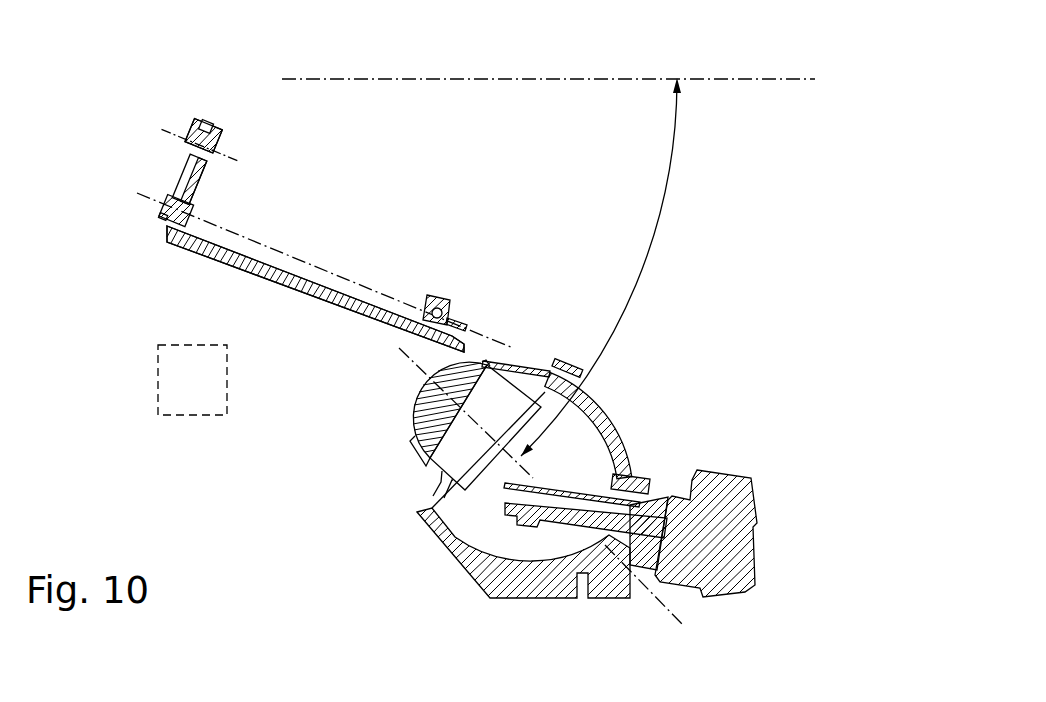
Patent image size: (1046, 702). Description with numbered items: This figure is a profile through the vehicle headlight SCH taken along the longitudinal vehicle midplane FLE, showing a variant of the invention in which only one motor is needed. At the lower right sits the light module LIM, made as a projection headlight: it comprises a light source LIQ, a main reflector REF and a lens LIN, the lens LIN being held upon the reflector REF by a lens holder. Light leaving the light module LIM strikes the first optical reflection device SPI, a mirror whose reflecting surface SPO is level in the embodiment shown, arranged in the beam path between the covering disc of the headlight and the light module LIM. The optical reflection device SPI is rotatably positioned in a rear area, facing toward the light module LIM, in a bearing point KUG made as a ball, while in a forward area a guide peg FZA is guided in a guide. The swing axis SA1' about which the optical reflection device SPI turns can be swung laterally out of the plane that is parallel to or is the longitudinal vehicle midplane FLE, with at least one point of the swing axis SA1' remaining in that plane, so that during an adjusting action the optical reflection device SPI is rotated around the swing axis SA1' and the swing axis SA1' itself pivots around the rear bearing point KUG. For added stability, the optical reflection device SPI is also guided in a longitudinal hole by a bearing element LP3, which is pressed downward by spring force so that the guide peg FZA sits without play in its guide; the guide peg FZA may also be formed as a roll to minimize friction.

The guide peg FZA is at (163, 205).
The bearing element LP3 is at (217, 150).
The optical reflection device SPI is at (297, 260).
The swing axis SA1' is at (409, 394).
The bearing point KUG is at (453, 312).
The vehicle headlight SCH is at (795, 143).
The reflector REF is at (607, 407).
The light source LIQ is at (750, 498).
The surface SPO is at (200, 250).
The longitudinal vehicle midplane FLE is at (157, 382).
The lens LIN is at (417, 388).
The light module LIM is at (380, 531).